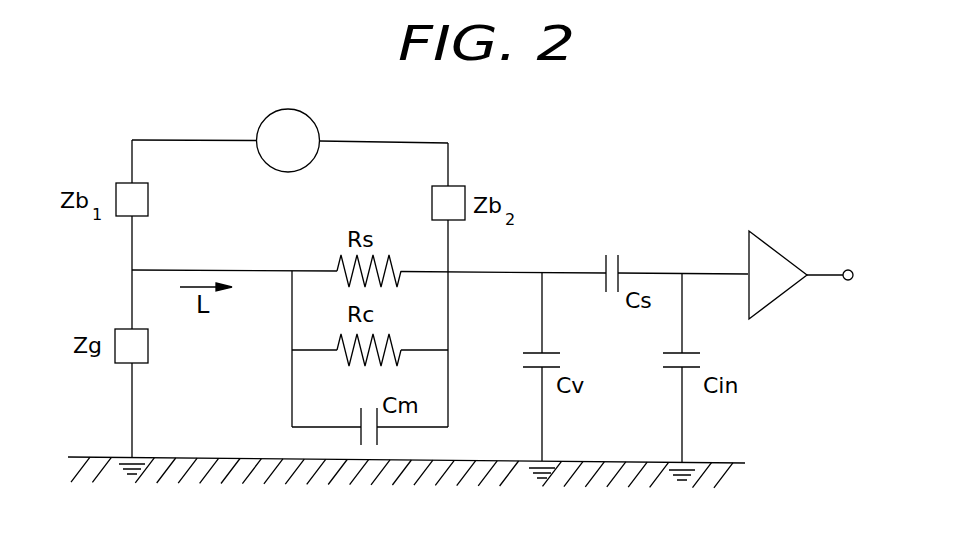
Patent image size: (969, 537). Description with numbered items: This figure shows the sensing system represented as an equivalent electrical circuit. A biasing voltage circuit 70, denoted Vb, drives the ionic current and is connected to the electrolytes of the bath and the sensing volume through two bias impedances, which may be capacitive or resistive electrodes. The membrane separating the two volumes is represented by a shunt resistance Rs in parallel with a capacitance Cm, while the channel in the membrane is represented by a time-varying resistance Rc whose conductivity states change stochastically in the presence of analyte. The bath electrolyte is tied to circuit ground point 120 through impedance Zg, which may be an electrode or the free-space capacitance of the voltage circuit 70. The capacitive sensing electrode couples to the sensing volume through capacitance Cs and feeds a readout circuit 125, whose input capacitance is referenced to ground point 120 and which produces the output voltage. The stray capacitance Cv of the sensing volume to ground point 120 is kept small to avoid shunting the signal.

The voltage circuit 70 is at (272, 112).
The circuit ground point 120 is at (127, 469).
The readout circuit 125 is at (777, 297).